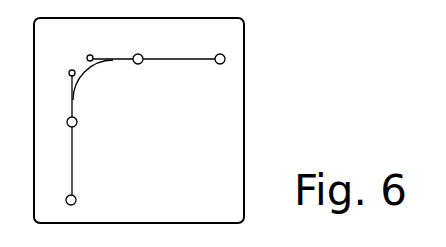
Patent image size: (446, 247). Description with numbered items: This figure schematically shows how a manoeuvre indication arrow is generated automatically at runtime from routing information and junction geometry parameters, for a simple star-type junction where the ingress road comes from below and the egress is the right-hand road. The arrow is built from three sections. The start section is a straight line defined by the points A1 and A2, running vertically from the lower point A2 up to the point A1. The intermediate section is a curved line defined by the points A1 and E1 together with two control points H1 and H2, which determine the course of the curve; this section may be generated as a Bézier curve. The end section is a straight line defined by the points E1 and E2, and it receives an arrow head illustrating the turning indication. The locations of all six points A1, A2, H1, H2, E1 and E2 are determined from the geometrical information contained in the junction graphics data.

The control point H1 is at (60, 73).
The control point H2 is at (88, 48).
The point E1 is at (139, 50).
The point E2 is at (219, 50).
The point A1 is at (61, 123).
The point A2 is at (59, 200).